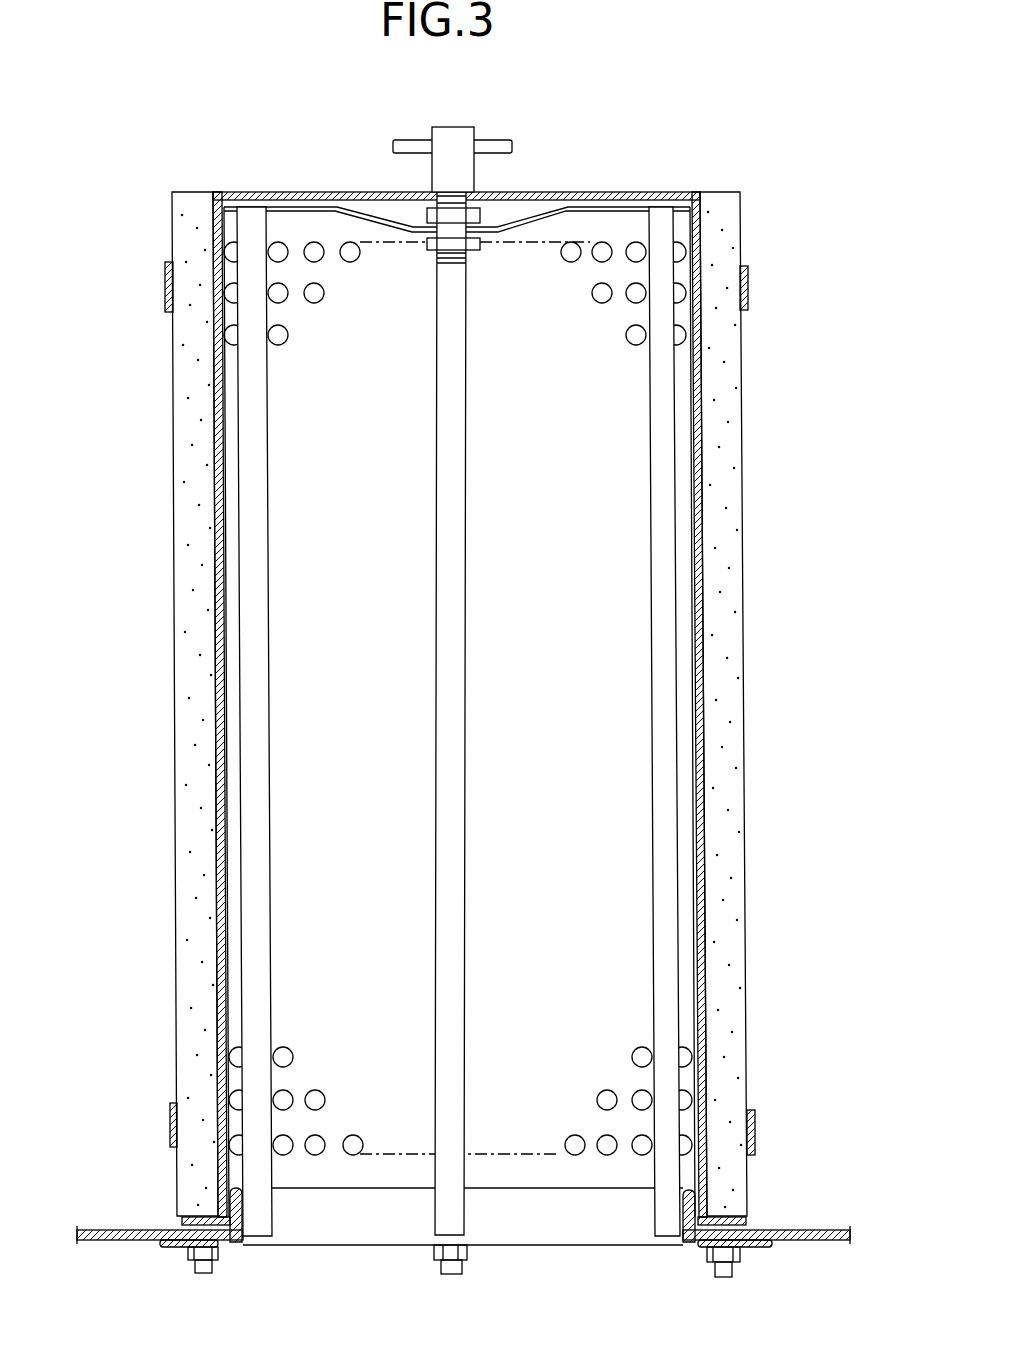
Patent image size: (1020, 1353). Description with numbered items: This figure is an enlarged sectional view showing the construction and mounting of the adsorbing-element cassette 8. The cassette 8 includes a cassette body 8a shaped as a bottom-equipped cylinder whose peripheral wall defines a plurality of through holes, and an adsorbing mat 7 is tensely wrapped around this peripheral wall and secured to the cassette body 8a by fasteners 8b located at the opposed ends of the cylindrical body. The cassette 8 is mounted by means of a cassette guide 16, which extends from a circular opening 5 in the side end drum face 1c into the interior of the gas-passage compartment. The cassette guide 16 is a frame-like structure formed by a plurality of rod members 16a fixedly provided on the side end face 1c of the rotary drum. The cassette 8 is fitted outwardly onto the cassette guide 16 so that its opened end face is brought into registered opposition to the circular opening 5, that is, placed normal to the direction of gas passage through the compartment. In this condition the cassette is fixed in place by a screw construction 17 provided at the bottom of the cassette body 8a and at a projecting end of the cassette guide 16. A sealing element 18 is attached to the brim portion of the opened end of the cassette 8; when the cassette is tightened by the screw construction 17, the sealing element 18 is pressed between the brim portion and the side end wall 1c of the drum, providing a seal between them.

The side end drum face 1c is at (803, 1245).
The circular opening 5 is at (598, 1262).
The adsorbing mat 7 is at (732, 443).
The adsorbing-element cassette 8 is at (724, 161).
The cassette body 8a is at (697, 225).
The fasteners 8b is at (748, 293).
The cassette guide 16 is at (290, 650).
The rod members 16a is at (266, 929).
The screw construction 17 is at (494, 172).
The sealing element 18 is at (183, 1226).